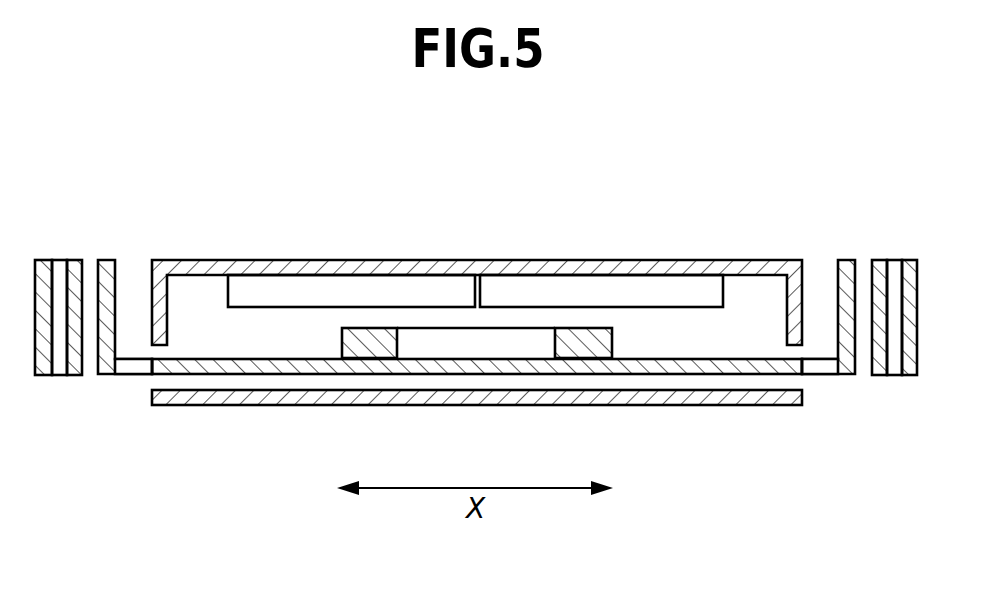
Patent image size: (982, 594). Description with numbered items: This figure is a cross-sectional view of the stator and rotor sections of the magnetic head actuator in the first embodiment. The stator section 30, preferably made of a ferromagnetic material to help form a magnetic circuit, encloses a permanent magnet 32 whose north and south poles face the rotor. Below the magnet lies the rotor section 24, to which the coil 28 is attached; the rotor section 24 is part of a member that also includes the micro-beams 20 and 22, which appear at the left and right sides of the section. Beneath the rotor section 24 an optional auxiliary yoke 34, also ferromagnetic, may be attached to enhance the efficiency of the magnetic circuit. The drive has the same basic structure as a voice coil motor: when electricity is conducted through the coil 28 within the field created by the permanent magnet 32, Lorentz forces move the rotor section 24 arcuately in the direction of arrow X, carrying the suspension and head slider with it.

The micro-beam 20 is at (73, 375).
The micro-beam 22 is at (880, 377).
The rotor section 24 is at (237, 368).
The coil 28 is at (423, 345).
The stator section 30 is at (702, 260).
The permanent magnet 32 is at (432, 295).
The auxiliary yoke 34 is at (715, 408).